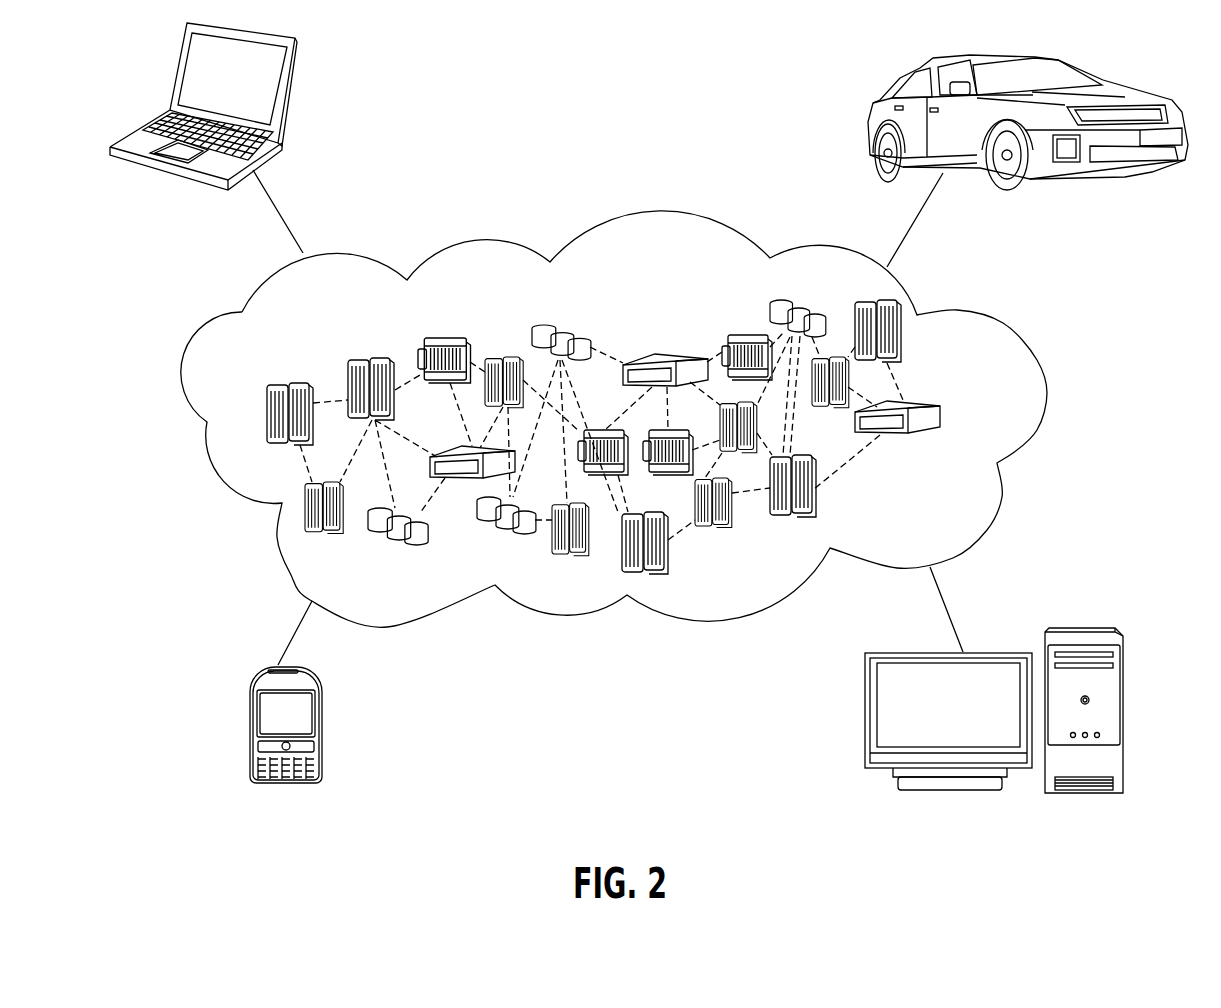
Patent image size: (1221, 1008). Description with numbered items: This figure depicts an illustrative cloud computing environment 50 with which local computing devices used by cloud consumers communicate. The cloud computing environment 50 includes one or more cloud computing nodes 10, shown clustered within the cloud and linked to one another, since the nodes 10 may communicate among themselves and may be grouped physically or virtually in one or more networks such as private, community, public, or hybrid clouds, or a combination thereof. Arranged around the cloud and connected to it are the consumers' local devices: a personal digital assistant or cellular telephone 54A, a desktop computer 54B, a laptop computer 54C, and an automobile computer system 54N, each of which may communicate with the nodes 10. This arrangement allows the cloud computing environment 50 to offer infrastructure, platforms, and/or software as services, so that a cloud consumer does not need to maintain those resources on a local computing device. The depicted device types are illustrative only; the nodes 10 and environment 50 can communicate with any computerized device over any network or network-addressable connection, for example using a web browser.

The cloud computing environment 50 is at (1004, 325).
The cloud computing nodes 10 is at (982, 415).
The personal digital assistant (PDA) or cellular telephone 54A is at (250, 730).
The desktop computer 54B is at (1088, 628).
The laptop computer 54C is at (297, 90).
The automobile computer system 54N is at (875, 103).